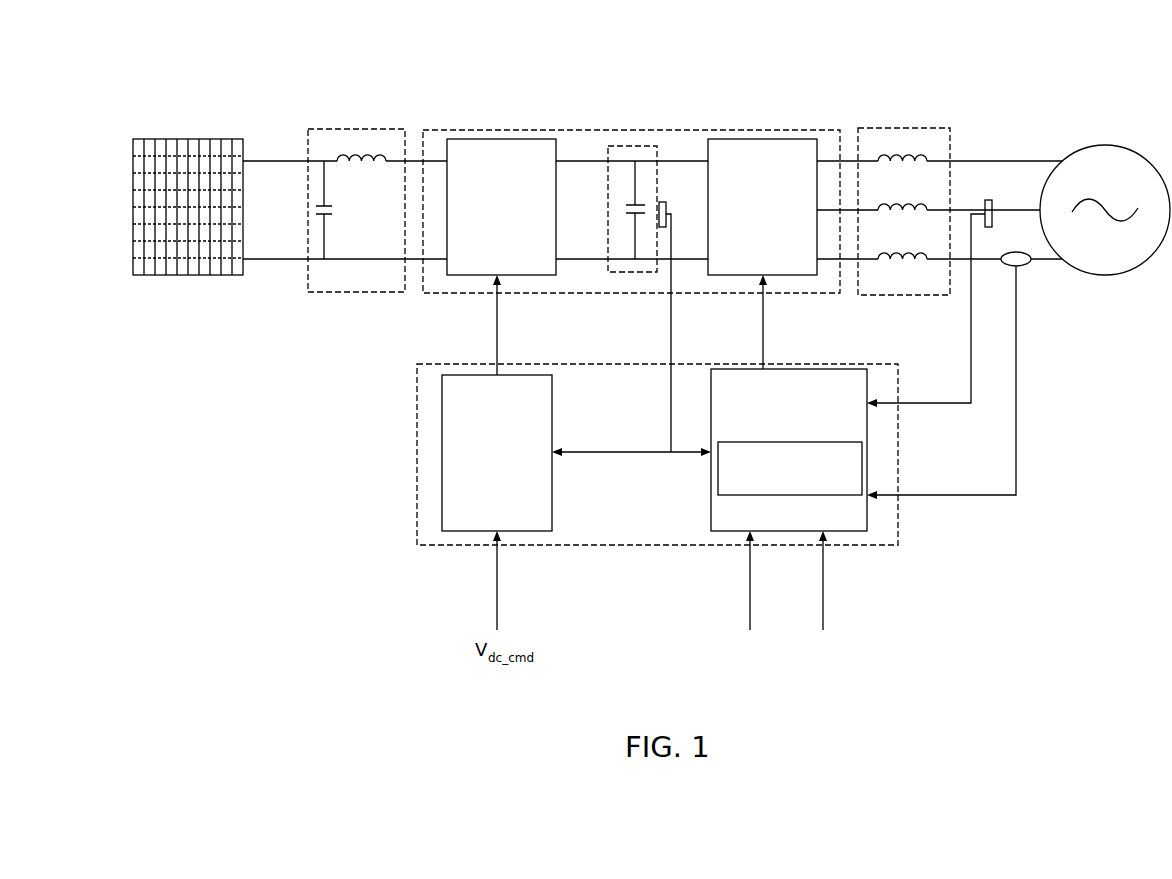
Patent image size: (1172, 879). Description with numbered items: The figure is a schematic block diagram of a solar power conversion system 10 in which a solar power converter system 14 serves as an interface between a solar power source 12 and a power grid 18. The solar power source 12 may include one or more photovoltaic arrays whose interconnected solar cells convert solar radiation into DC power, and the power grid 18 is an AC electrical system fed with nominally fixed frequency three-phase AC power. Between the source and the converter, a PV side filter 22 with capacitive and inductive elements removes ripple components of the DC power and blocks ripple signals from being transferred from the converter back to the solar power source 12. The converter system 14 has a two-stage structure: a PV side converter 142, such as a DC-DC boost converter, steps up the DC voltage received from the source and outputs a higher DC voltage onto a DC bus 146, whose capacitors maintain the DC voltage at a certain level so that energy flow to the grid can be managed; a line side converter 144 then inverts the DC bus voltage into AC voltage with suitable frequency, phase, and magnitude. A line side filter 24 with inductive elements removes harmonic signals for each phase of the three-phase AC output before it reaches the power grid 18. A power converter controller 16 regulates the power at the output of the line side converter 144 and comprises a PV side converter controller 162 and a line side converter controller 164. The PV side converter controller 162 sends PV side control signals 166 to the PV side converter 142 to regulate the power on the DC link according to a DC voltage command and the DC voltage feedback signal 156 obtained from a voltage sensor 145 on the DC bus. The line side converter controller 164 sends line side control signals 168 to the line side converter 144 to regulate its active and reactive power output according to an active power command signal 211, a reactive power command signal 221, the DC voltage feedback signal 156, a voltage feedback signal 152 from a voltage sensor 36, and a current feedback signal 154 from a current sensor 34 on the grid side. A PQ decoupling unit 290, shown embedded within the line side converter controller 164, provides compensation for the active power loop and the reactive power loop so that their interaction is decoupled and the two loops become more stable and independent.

The solar power conversion system 10 is at (243, 54).
The solar power source 12 is at (185, 139).
The solar power converter system 14 is at (598, 130).
The power converter controller 16 is at (431, 535).
The power grid 18 is at (1100, 145).
The PV side filter 22 is at (355, 129).
The line side filter 24 is at (905, 128).
The current sensor 34 is at (1018, 264).
The voltage sensor 36 is at (989, 200).
The PV side converter 142 is at (466, 139).
The line side converter 144 is at (768, 139).
The voltage sensor 145 is at (666, 205).
The DC bus 146 is at (640, 272).
The voltage feedback signal 152 is at (950, 408).
The current feedback signal 154 is at (975, 498).
The DC voltage feedback signal 156 is at (671, 420).
The PV side converter controller 162 is at (533, 517).
The line side converter controller 164 is at (711, 527).
The PV side control signals 166 is at (497, 333).
The line side control signals 168 is at (763, 333).
The active power command signal 211 is at (750, 600).
The reactive power command signal 221 is at (823, 605).
The PQ decoupling unit 290 is at (793, 496).